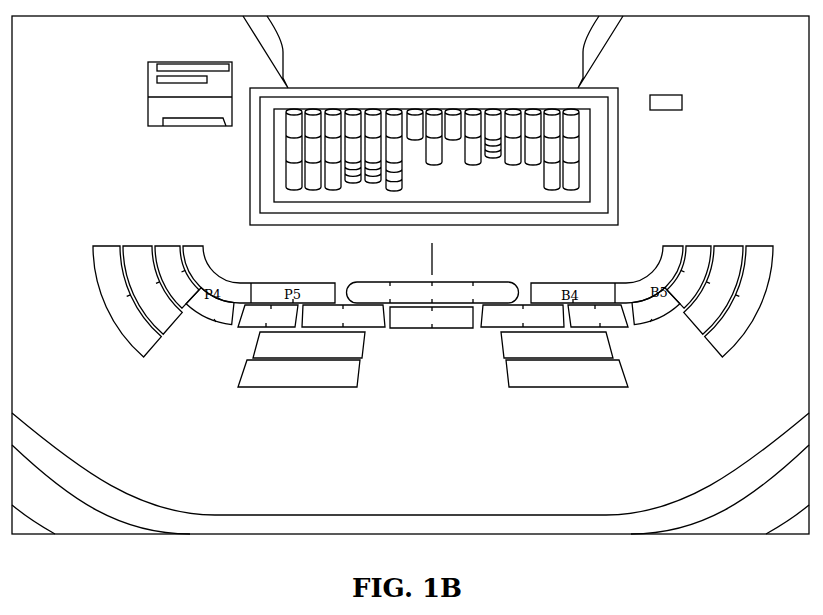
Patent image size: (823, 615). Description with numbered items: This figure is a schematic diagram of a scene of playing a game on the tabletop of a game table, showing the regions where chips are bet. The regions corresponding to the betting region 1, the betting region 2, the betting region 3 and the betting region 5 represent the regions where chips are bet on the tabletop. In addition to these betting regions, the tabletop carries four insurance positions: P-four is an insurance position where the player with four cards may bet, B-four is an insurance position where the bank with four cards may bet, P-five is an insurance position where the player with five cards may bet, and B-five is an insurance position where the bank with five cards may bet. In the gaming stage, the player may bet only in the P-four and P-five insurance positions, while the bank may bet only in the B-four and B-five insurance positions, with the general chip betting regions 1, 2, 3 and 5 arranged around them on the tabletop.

The chip betting region 1 is at (727, 301).
The chip betting region 2 is at (564, 375).
The chip betting region 3 is at (301, 373).
The chip betting region 5 is at (137, 301).